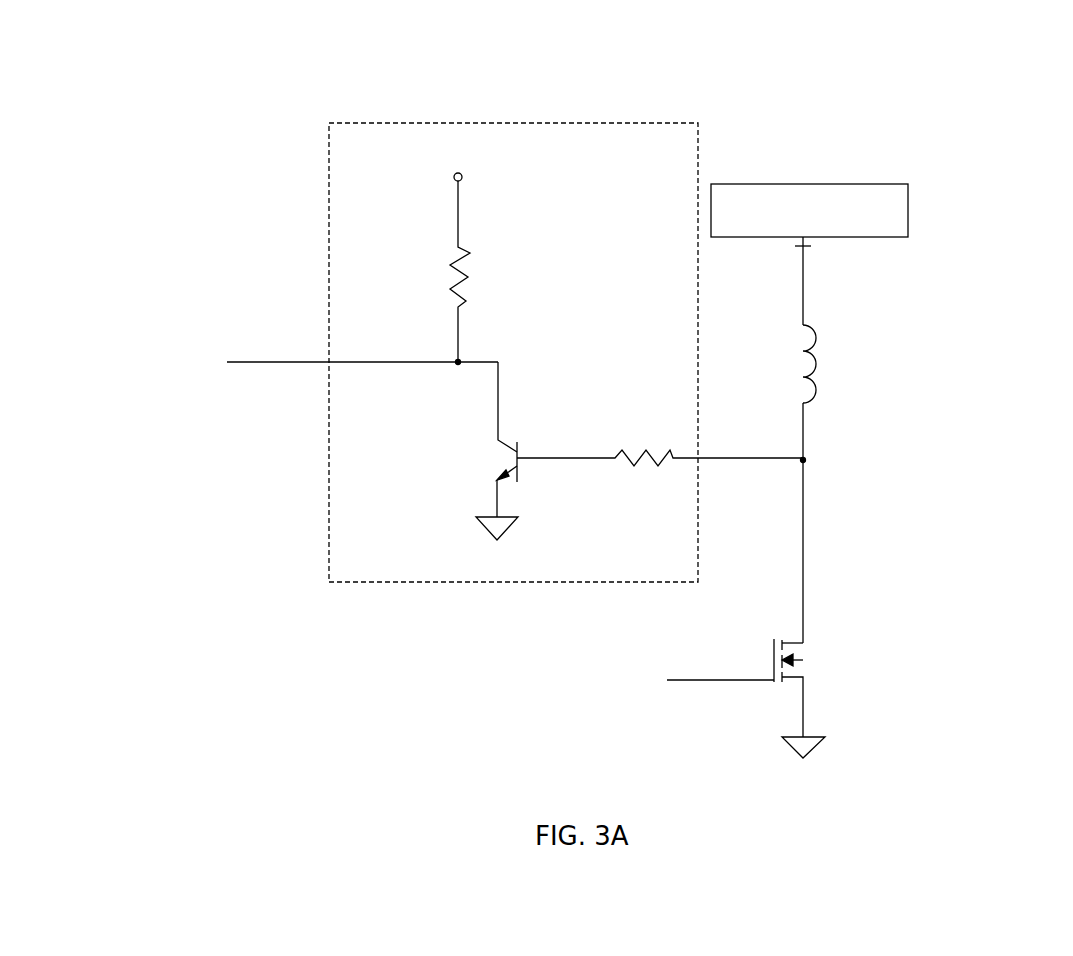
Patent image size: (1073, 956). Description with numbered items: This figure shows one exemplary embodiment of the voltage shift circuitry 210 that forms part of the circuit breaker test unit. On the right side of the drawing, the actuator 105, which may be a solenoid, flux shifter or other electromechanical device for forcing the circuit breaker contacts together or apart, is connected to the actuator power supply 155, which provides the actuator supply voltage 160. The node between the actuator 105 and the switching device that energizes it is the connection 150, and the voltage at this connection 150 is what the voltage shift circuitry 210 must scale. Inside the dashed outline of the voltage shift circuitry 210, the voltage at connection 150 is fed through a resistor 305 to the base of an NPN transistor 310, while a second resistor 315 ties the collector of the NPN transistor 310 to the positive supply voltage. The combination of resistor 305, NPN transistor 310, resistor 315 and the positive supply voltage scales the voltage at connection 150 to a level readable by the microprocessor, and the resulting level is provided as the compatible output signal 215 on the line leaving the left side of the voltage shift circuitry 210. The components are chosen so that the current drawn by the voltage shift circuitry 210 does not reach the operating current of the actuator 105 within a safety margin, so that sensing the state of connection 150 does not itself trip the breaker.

The voltage shift circuitry 210 is at (513, 122).
The compatible output signal 215 is at (276, 362).
The resistor 305 is at (642, 457).
The NPN transistor 310 is at (520, 455).
The resistor 315 is at (466, 276).
The actuator power supply 155 is at (908, 209).
The actuator supply voltage 160 is at (811, 247).
The actuator 105 is at (815, 365).
The connection 150 is at (803, 440).